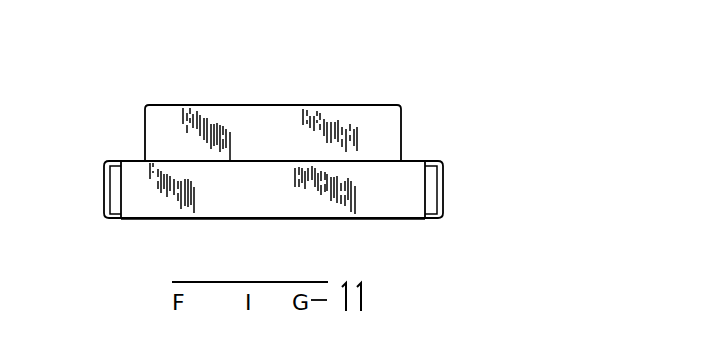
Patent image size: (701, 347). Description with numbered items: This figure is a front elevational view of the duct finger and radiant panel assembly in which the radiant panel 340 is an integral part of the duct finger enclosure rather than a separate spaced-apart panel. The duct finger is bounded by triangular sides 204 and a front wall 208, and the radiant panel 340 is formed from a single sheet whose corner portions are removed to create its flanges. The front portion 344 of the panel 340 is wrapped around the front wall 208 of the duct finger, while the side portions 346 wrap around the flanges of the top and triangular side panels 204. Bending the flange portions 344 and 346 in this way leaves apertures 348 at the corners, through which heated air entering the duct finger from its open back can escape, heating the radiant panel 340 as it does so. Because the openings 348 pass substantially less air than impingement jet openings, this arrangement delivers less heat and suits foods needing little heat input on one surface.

The triangular side 204 is at (404, 123).
The front wall 208 is at (257, 128).
The radiant panel 340 is at (367, 220).
The front portion 344 is at (228, 190).
The side portion 346 is at (104, 190).
The aperture 348 is at (117, 180).